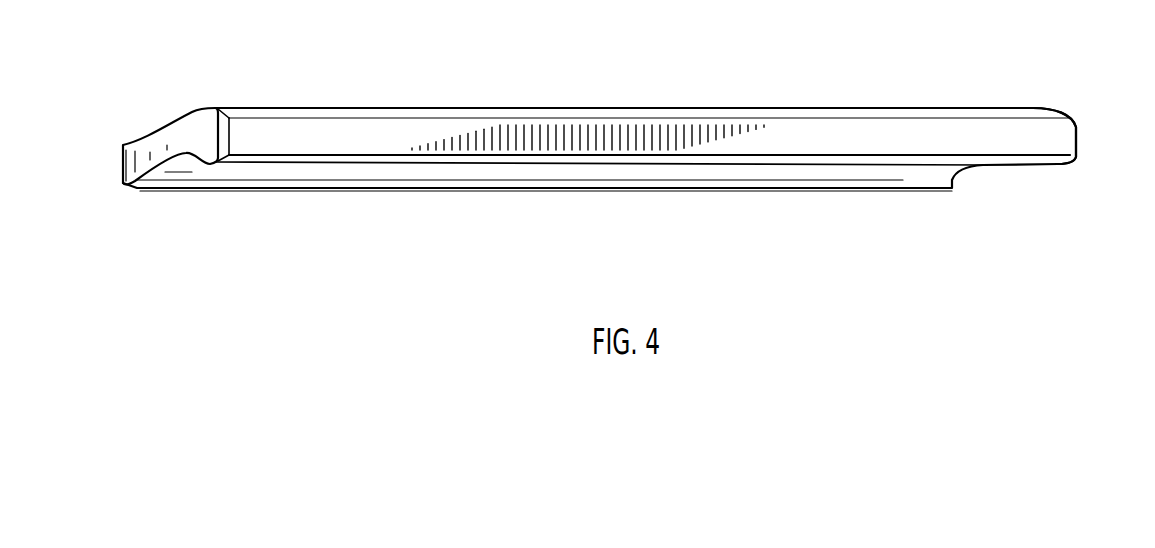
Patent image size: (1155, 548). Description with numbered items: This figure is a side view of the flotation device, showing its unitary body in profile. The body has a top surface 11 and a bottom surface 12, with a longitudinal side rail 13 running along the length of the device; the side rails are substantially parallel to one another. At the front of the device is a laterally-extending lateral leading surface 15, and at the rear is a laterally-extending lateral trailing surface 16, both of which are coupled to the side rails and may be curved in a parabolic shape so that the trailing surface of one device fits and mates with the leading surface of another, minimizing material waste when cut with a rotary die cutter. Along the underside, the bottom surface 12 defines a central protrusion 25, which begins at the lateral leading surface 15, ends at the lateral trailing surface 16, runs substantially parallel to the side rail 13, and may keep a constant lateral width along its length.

The top surface 11 is at (528, 110).
The bottom surface 12 is at (515, 190).
The longitudinal side rail 13 is at (878, 138).
The lateral leading surface 15 is at (131, 163).
The lateral trailing surface 16 is at (1078, 140).
The central protrusion 25 is at (357, 190).